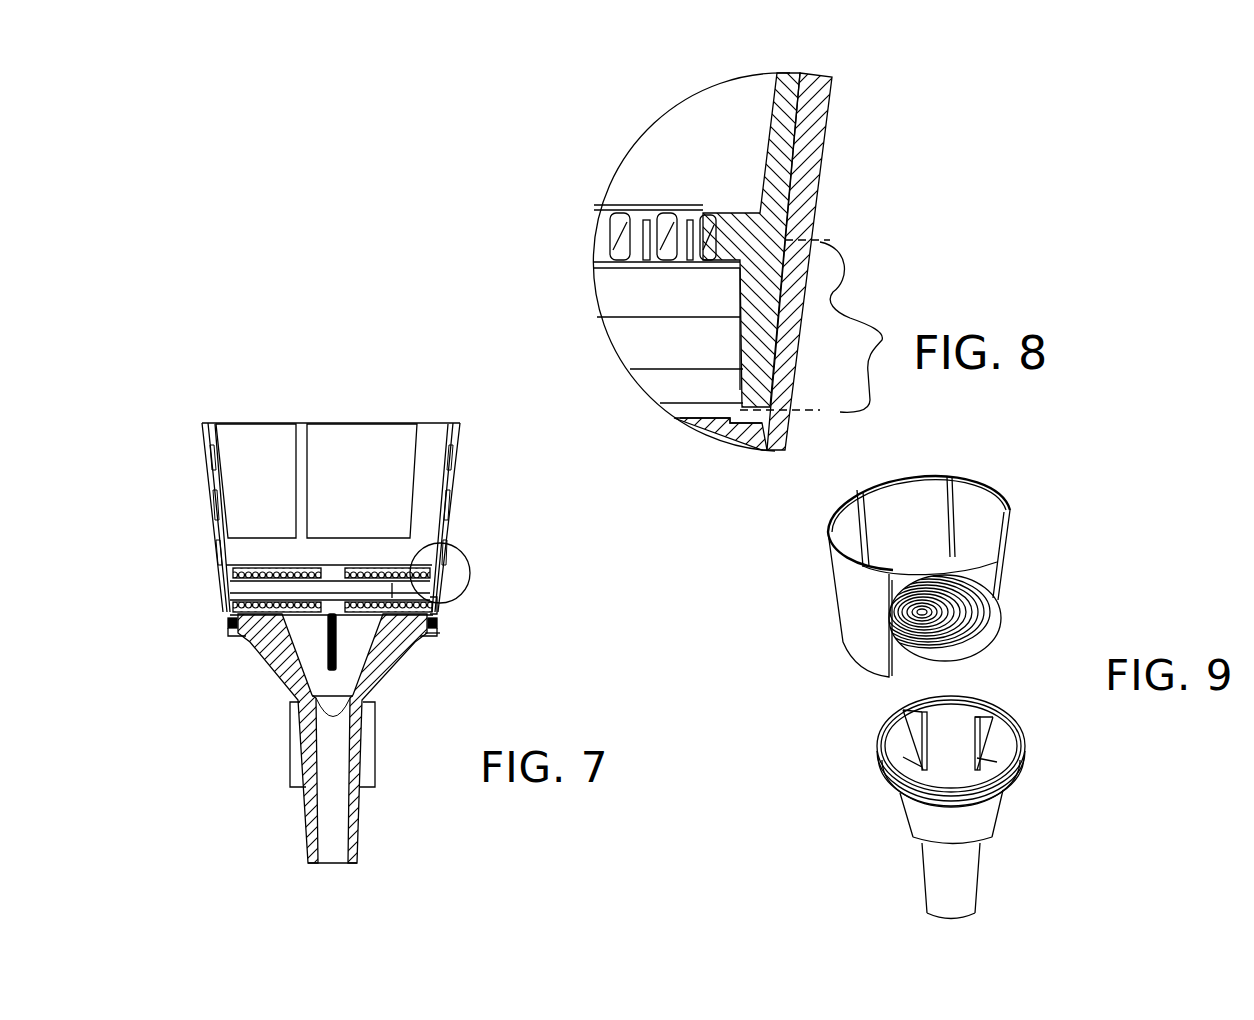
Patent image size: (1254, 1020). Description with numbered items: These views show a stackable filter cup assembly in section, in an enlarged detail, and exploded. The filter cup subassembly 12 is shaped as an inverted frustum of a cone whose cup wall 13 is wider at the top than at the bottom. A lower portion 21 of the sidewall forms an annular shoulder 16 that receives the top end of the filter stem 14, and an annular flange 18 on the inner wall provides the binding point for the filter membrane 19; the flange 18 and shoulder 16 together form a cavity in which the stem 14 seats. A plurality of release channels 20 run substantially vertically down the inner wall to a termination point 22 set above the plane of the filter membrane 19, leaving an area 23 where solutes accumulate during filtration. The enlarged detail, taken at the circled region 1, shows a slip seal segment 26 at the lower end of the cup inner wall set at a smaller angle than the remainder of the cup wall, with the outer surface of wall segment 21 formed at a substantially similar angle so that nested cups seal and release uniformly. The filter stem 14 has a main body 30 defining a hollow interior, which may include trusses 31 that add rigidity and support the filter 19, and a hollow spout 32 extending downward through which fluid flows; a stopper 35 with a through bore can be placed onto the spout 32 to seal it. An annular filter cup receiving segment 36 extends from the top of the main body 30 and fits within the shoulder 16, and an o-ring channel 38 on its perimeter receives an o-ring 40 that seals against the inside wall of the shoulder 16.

In FIG. 7, the sectional detail location 1 is at (470, 558).
In FIG. 7, the stackable filter cup subassembly 12 is at (461, 479).
In FIG. 9, the stackable filter cup subassembly 12 is at (1018, 538).
In FIG. 7, the wall 13 is at (210, 447).
In FIG. 8, the wall 13 is at (833, 100).
In FIG. 9, the filter stem 14 is at (1005, 812).
In FIG. 8, the annular shoulder 16 is at (737, 317).
In FIG. 7, the annular flange 18 is at (227, 607).
In FIG. 8, the annular flange 18 is at (716, 240).
In FIG. 7, the filter membrane 19 is at (935, 639).
In FIG. 8, the filter membrane 19 is at (623, 230).
In FIG. 9, the filter membrane 19 is at (930, 612).
In FIG. 7, the release channels 20 is at (413, 493).
In FIG. 8, the release channels 20 is at (808, 78).
In FIG. 9, the release channels 20 is at (867, 517).
In FIG. 7, the lower portion of sidewall 21 is at (433, 608).
In FIG. 8, the lower portion of sidewall 21 is at (777, 317).
In FIG. 9, the termination point 22 is at (963, 547).
In FIG. 7, the area for solute accumulation 23 is at (392, 591).
In FIG. 8, the slip seal segment 26 is at (867, 325).
In FIG. 7, the main body 30 is at (285, 683).
In FIG. 9, the main body 30 is at (903, 815).
In FIG. 7, the trusses 31 is at (311, 688).
In FIG. 9, the trusses 31 is at (918, 757).
In FIG. 7, the spout 32 is at (308, 803).
In FIG. 9, the spout 32 is at (922, 887).
In FIG. 7, the stopper 35 is at (376, 730).
In FIG. 7, the filter cup receiving segment 36 is at (433, 633).
In FIG. 9, the filter cup receiving segment 36 is at (893, 712).
In FIG. 7, the o-ring channel 38 is at (235, 632).
In FIG. 9, the o-ring channel 38 is at (1020, 767).
In FIG. 7, the o-ring 40 is at (436, 630).